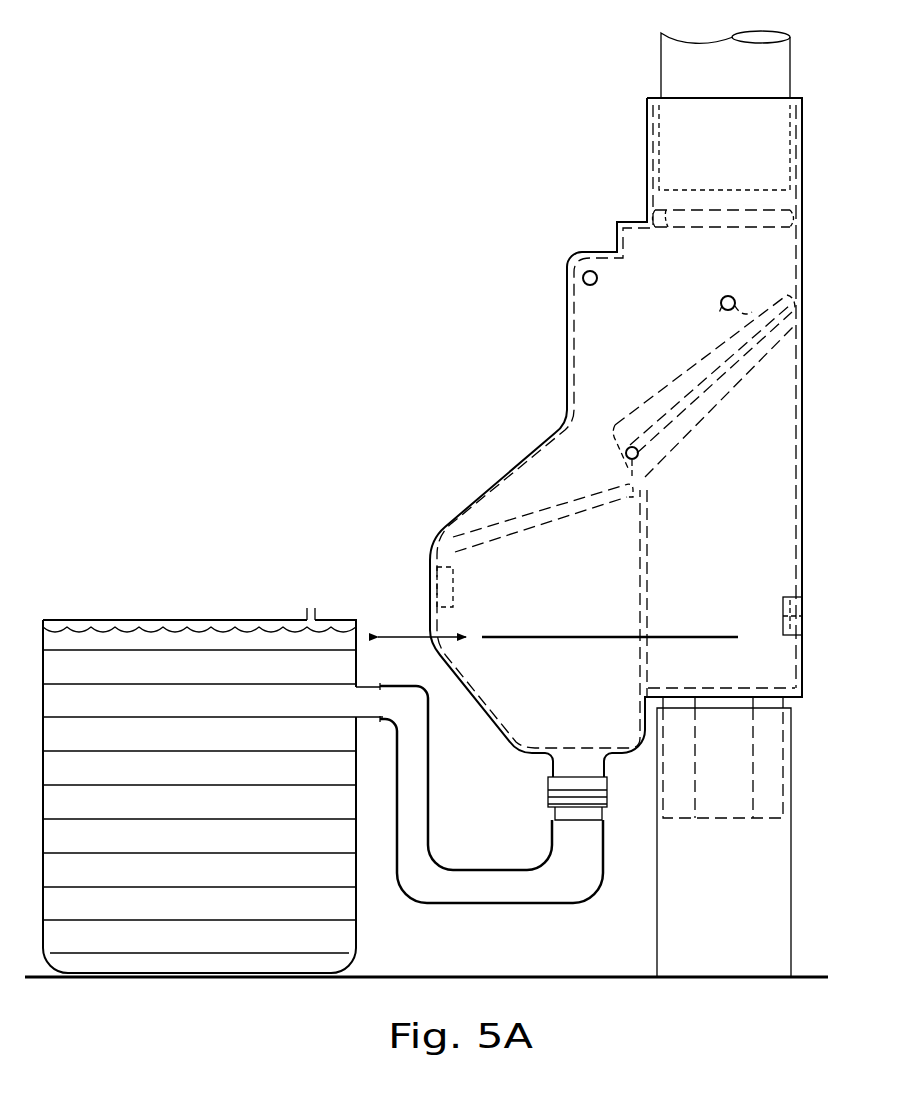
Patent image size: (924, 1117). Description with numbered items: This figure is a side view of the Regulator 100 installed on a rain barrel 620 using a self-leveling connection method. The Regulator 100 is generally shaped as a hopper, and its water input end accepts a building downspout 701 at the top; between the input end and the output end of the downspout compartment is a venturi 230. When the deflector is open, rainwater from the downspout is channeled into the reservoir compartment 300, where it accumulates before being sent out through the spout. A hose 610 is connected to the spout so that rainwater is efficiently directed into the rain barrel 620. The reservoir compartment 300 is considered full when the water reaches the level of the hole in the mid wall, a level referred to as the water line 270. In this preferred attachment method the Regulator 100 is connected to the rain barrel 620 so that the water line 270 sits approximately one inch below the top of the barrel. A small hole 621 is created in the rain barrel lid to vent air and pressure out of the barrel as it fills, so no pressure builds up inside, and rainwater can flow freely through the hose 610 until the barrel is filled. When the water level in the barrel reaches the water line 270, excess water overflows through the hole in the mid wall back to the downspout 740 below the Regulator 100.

The Regulator 100 is at (564, 315).
The venturi 230 is at (649, 203).
The water line 270 is at (514, 630).
The reservoir compartment 300 is at (533, 702).
The hose 610 is at (543, 906).
The rain barrel 620 is at (316, 918).
The small hole 621 is at (305, 607).
The building downspout 701 is at (659, 60).
The downspout 740 is at (729, 958).